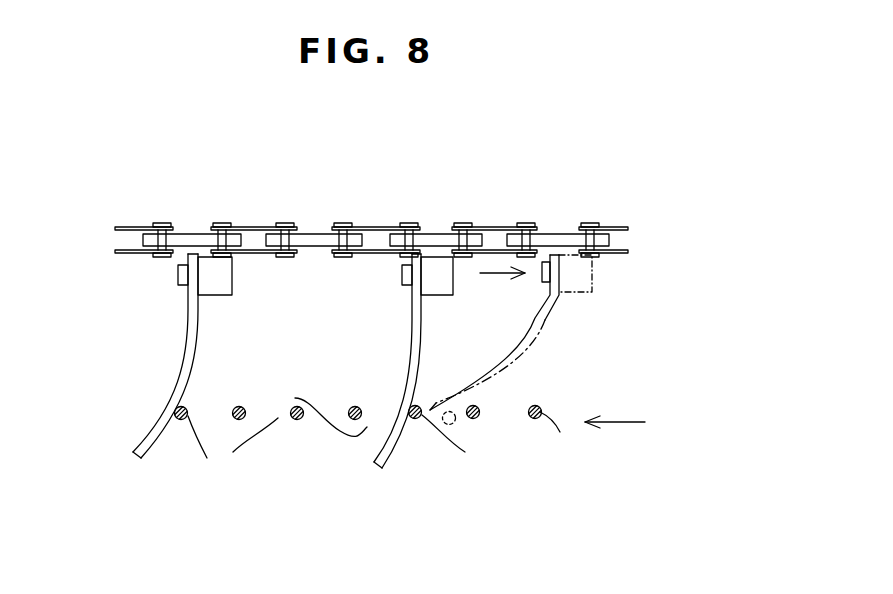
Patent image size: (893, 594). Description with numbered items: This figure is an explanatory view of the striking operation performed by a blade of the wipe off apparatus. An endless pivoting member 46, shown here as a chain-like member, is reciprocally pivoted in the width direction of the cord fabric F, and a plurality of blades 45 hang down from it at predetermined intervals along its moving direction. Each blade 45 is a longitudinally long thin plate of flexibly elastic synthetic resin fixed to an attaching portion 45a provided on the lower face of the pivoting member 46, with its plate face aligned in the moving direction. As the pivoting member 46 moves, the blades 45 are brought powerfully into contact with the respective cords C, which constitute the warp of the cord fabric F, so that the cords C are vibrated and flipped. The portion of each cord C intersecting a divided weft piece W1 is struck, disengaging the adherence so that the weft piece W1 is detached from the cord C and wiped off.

The pivoting member 46 is at (308, 220).
The attaching portion 45a is at (435, 268).
The blade 45 is at (188, 347).
The weft piece W1 is at (192, 440).
The cord C is at (302, 420).
The cord fabric F is at (626, 424).